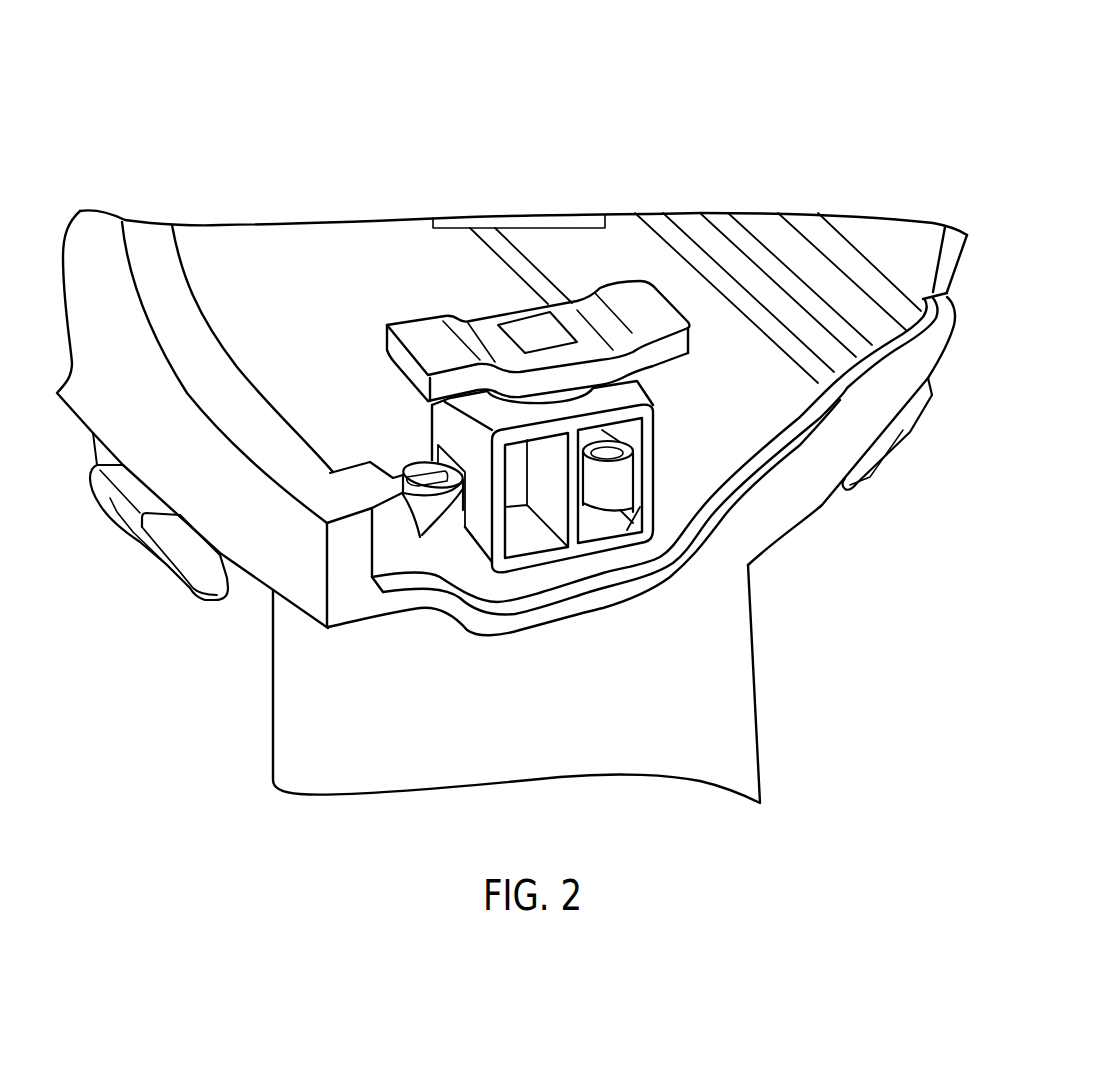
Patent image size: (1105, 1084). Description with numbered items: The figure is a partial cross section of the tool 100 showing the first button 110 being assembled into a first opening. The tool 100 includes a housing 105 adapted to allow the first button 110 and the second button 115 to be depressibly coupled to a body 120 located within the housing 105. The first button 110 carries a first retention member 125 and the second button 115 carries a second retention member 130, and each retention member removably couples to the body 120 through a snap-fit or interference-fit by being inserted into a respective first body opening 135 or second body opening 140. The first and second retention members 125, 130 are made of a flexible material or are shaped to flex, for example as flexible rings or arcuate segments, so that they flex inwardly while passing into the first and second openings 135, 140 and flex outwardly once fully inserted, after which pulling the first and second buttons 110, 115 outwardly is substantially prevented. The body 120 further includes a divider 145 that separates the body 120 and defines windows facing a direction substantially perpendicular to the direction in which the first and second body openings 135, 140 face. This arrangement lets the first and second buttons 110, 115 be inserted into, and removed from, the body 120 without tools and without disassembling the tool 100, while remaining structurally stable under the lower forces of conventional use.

The tool 100 is at (1013, 152).
The housing 105 is at (782, 527).
The first button 110 is at (97, 493).
The second button 115 is at (907, 433).
The body 120 is at (408, 344).
The first retention member 125 is at (393, 477).
The second retention member 130 is at (605, 488).
The first body opening 135 is at (432, 513).
The second body opening 140 is at (633, 475).
The divider 145 is at (577, 513).